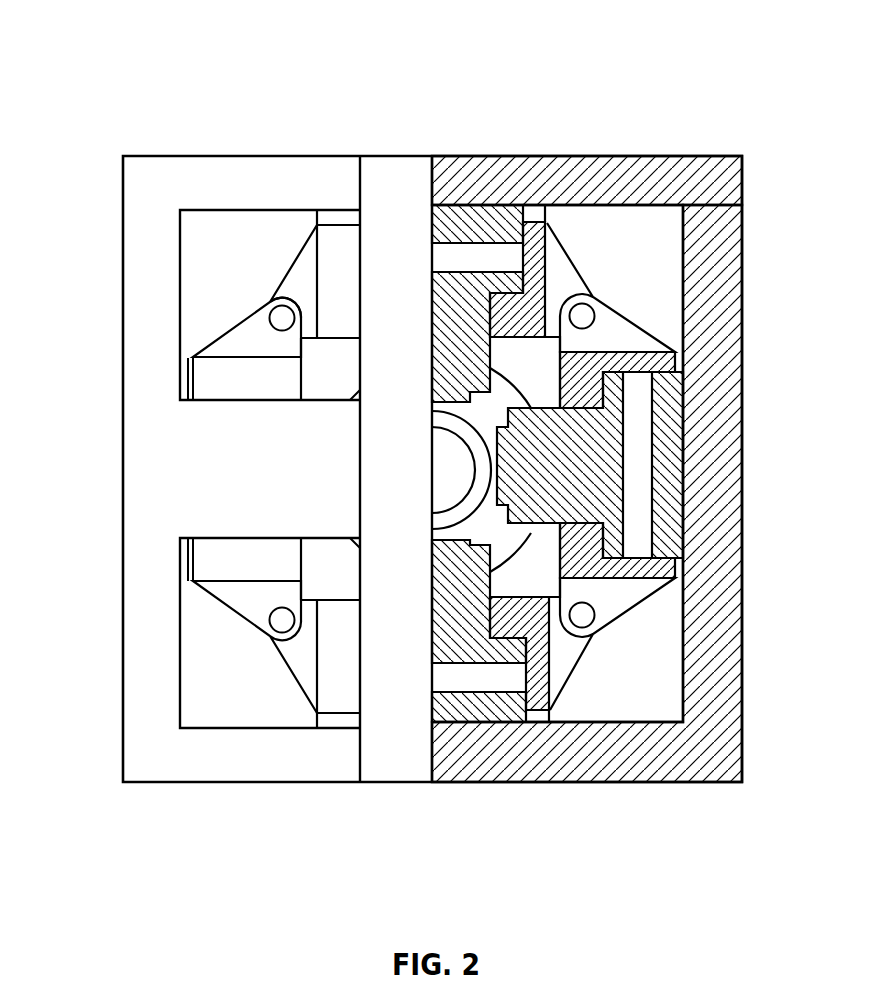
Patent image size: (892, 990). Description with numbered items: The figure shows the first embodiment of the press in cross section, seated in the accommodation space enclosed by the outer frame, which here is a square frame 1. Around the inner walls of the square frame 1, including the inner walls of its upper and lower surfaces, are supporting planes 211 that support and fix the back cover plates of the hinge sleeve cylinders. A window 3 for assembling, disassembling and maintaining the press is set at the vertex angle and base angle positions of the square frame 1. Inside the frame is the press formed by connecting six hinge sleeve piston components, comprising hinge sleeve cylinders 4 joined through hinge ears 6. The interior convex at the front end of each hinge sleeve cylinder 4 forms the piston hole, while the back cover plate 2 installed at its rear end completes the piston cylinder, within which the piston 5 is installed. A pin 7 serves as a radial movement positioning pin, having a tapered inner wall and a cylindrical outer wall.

The square frame 1 is at (123, 373).
The back cover plate 2 is at (675, 420).
The window 3 is at (293, 227).
The hinge sleeve cylinder 4 is at (742, 157).
The piston 5 is at (603, 348).
The hinge ear 6 is at (250, 325).
The radial movement positioning pin 7 is at (270, 298).
The supporting plane 211 is at (590, 195).